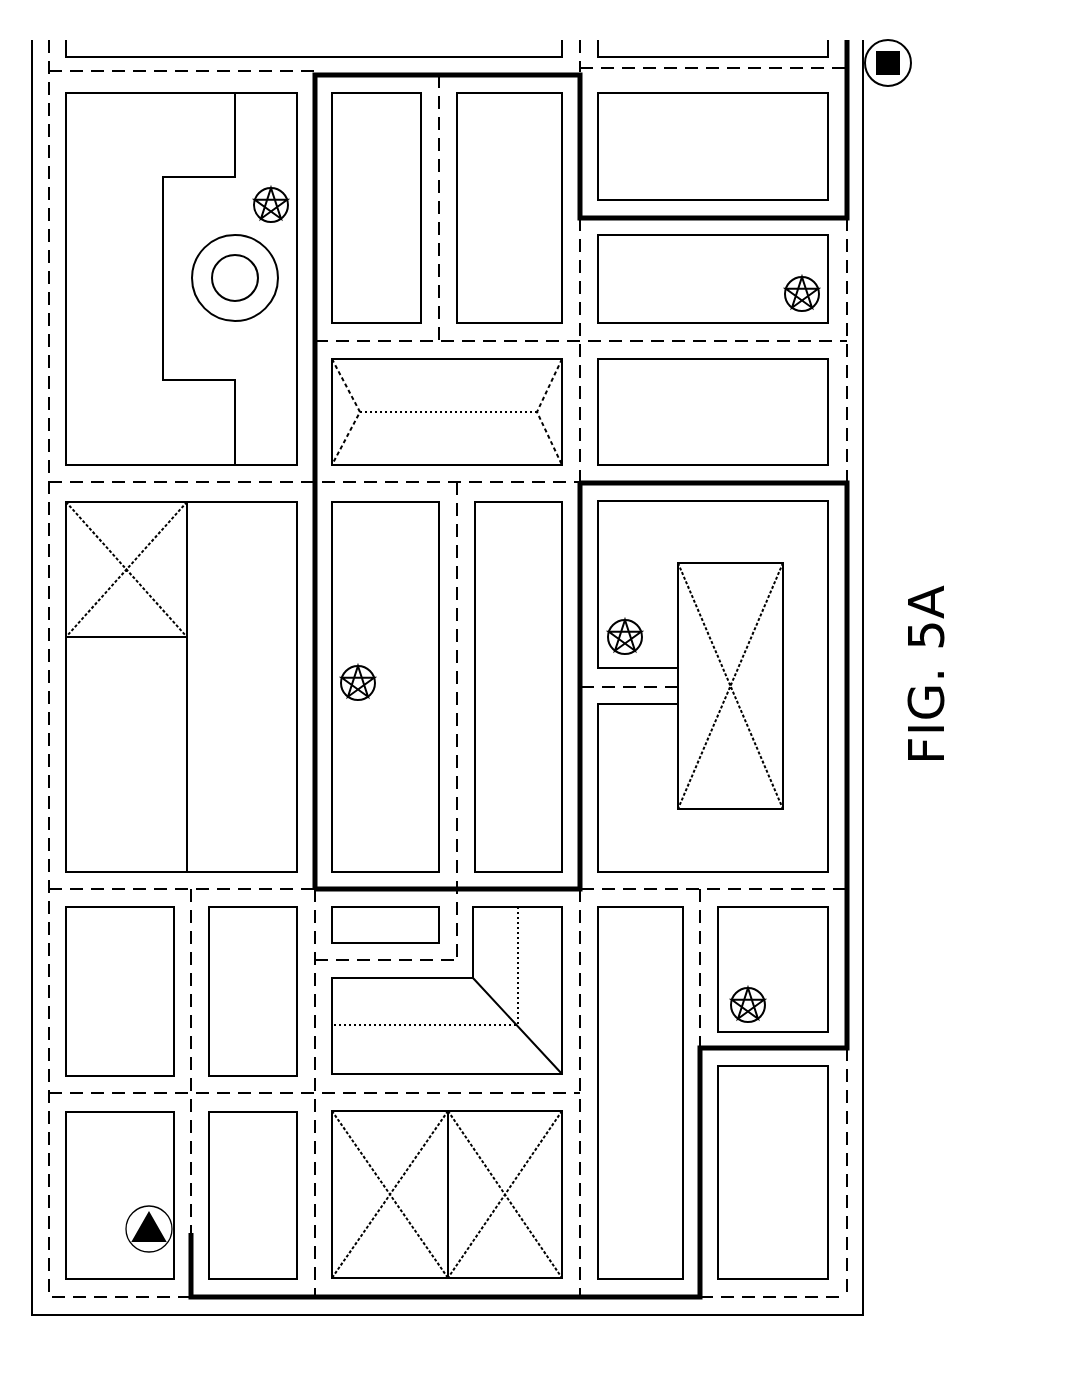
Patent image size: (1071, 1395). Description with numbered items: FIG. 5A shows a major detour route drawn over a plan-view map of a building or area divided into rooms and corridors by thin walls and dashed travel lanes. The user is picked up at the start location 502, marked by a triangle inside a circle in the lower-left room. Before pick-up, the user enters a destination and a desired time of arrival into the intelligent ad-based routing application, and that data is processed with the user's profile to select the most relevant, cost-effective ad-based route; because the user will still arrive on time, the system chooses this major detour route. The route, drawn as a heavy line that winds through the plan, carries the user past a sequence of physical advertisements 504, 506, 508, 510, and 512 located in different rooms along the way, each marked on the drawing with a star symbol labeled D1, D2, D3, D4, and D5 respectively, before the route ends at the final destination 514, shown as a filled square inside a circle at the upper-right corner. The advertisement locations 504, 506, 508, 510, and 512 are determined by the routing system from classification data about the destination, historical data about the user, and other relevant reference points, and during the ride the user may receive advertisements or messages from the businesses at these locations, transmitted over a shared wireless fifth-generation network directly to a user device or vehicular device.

The start location 502 is at (127, 1230).
The physical advertisement 504 is at (762, 995).
The physical advertisement 506 is at (641, 627).
The physical advertisement 508 is at (374, 692).
The physical advertisement 510 is at (250, 212).
The physical advertisement 512 is at (782, 303).
The final destination 514 is at (908, 75).
The detector D1 is at (748, 987).
The detector D2 is at (625, 620).
The detector D3 is at (358, 666).
The detector D4 is at (271, 188).
The detector D5 is at (802, 277).